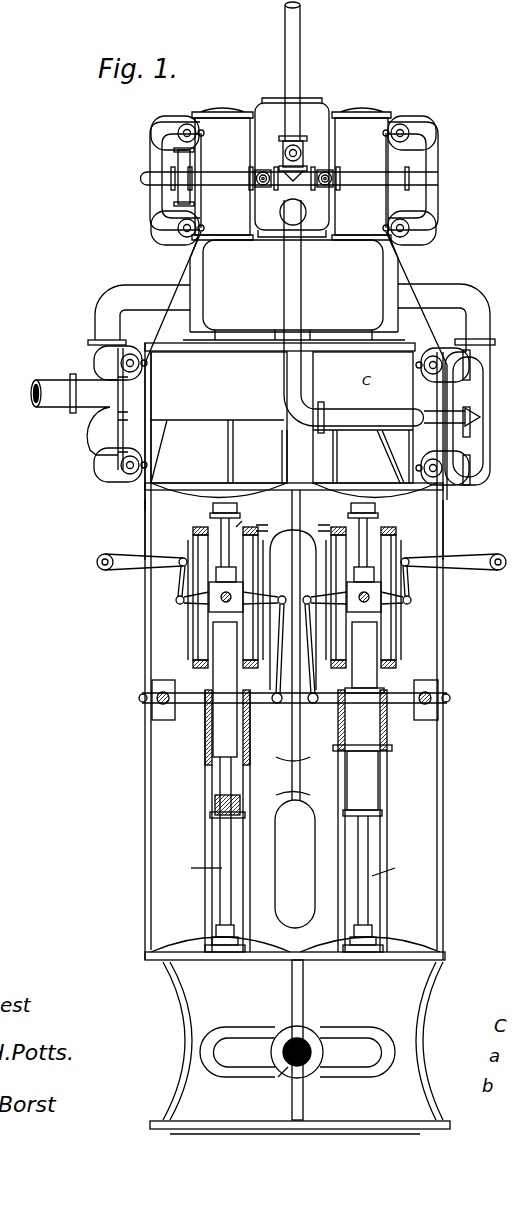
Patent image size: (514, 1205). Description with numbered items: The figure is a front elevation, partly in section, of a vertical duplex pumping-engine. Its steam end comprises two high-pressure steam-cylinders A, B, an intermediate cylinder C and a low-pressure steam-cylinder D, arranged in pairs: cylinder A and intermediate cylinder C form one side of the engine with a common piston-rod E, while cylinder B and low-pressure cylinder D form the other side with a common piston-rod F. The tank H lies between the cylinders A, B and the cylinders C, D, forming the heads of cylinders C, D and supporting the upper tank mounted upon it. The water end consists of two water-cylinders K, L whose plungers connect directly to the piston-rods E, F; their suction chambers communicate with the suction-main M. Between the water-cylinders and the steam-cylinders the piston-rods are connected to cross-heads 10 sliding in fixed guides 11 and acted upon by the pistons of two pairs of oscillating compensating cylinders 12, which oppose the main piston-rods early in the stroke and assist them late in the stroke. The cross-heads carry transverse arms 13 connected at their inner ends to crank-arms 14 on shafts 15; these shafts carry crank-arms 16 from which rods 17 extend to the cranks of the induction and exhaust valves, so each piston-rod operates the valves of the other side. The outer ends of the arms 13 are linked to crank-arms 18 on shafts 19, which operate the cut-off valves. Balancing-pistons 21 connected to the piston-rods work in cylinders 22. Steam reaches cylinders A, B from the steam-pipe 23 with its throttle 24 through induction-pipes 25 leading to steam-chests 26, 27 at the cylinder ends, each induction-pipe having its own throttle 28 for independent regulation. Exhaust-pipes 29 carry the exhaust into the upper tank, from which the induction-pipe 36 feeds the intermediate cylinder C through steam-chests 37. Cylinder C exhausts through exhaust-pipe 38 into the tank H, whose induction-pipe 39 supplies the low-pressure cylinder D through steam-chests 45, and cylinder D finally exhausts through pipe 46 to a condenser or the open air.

The cross-heads 10 is at (216, 600).
The fixed guides 11 is at (196, 546).
The oscillating compensating cylinders 12 is at (295, 589).
The transverse arms 13 is at (293, 599).
The crank-arms 14 is at (294, 701).
The shafts 15 is at (165, 689).
The crank-arms 16 is at (151, 703).
The rods 17 is at (145, 523).
The crank-arms 18 is at (140, 572).
The shafts 19 is at (99, 569).
The balancing-pistons 21 is at (298, 689).
The cylinders 22 is at (210, 738).
The steam-pipe 23 is at (299, 38).
The throttle 24 is at (300, 157).
The induction-pipes 25 is at (152, 158).
The steam-chests 26 is at (406, 124).
The steam-chests 27 is at (190, 124).
The throttle 28 is at (266, 188).
The exhaust-pipes 29 is at (181, 165).
The induction-pipe 36 is at (292, 282).
The steam-chests 37 is at (431, 353).
The exhaust-pipe 38 is at (456, 276).
The induction-pipe 39 is at (88, 456).
The steam-chests 45 is at (143, 352).
The exhaust pipe 46 is at (79, 409).
The high-pressure steam-cylinder A is at (361, 174).
The high-pressure steam-cylinder B is at (222, 174).
The intermediate cylinder C is at (292, 167).
The low-pressure steam-cylinder D is at (219, 417).
The piston-rod E is at (307, 689).
The piston-rod F is at (212, 821).
The tank H is at (294, 289).
The water-cylinder K is at (404, 1041).
The water-cylinder L is at (205, 1041).
The suction-main M is at (297, 1058).